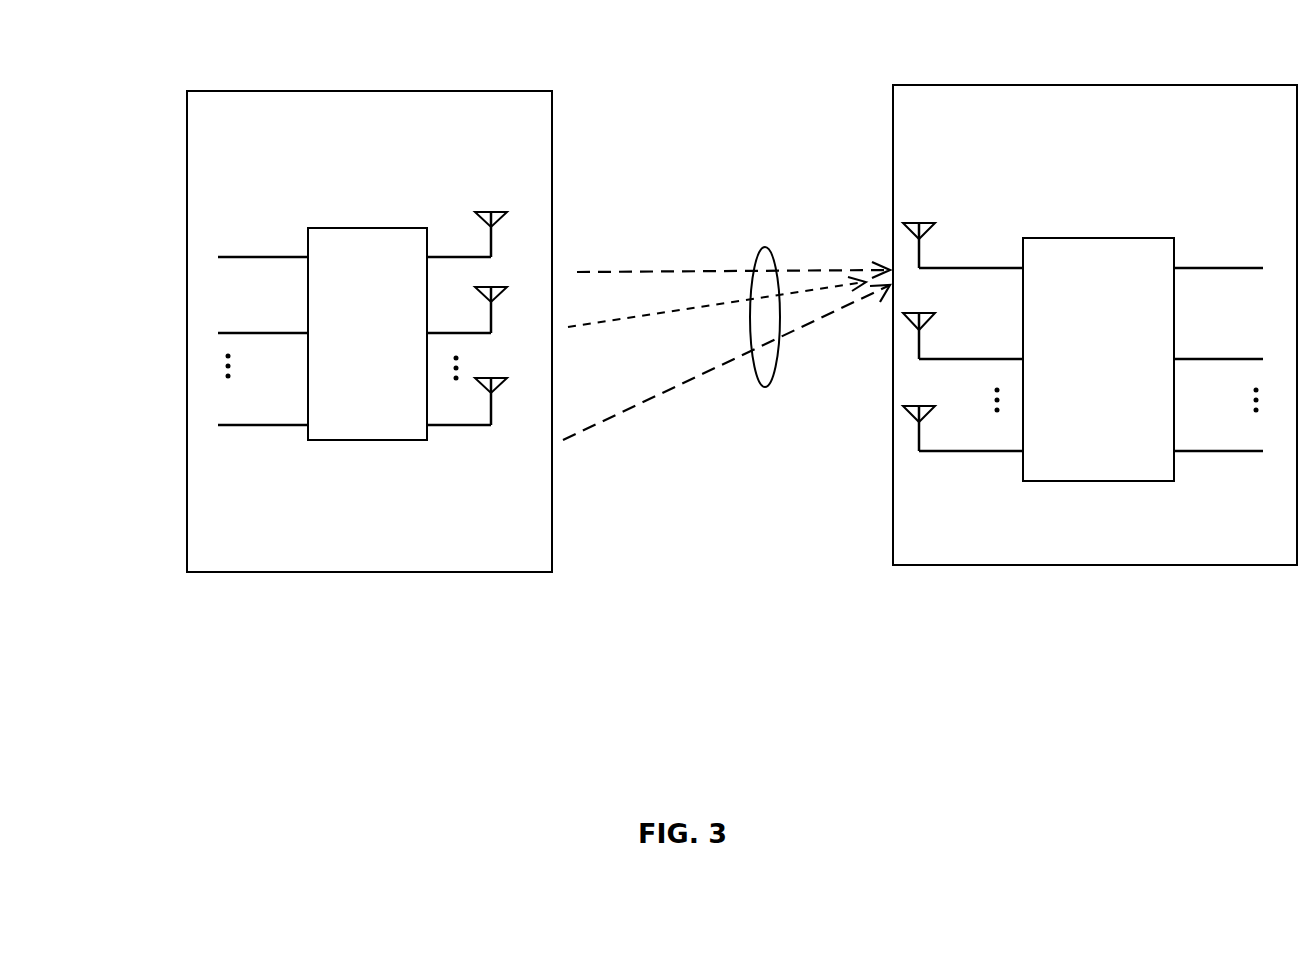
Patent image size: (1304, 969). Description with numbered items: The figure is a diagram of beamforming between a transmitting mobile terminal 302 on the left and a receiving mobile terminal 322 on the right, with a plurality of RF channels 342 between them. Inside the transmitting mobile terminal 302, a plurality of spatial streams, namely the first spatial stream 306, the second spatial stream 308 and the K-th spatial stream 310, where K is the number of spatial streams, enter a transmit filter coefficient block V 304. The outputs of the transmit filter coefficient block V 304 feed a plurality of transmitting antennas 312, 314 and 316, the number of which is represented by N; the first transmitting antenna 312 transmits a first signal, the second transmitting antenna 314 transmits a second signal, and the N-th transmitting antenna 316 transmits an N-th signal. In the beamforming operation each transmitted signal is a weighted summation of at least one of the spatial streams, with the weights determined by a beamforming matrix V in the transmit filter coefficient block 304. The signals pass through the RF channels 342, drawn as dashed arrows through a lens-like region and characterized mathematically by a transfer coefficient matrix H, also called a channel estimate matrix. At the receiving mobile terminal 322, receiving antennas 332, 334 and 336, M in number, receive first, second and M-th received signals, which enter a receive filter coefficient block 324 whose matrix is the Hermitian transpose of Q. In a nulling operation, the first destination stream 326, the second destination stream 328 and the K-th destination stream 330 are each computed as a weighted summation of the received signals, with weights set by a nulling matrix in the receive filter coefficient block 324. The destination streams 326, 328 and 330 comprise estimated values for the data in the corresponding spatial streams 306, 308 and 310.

The transmitting mobile terminal 302 is at (388, 91).
The transmit filter coefficient block V 304 is at (375, 228).
The spatial stream ss1 306 is at (263, 257).
The spatial stream ss2 308 is at (261, 333).
The spatial stream ssK 310 is at (259, 425).
The transmitting antenna 312 is at (493, 229).
The transmitting antenna 314 is at (493, 304).
The transmitting antenna 316 is at (493, 395).
The receiving mobile terminal 322 is at (1046, 85).
The receive filter coefficient block Q^H 324 is at (1099, 238).
The destination stream s^1 326 is at (1206, 268).
The destination stream s^2 328 is at (1206, 359).
The destination stream s^K 330 is at (1206, 451).
The receiving antenna 332 is at (952, 269).
The receiving antenna 334 is at (952, 360).
The receiving antenna 336 is at (952, 452).
The RF channels 342 is at (773, 382).